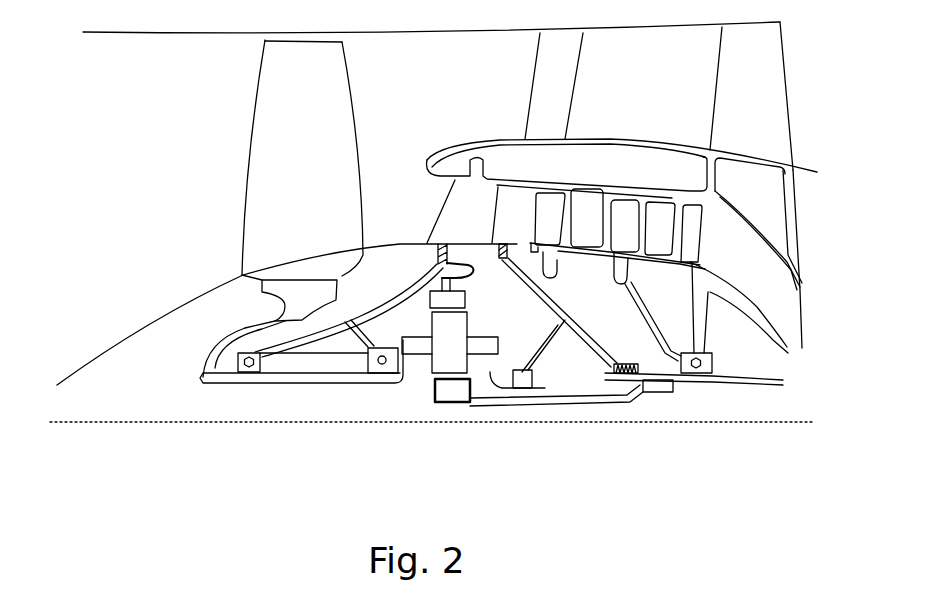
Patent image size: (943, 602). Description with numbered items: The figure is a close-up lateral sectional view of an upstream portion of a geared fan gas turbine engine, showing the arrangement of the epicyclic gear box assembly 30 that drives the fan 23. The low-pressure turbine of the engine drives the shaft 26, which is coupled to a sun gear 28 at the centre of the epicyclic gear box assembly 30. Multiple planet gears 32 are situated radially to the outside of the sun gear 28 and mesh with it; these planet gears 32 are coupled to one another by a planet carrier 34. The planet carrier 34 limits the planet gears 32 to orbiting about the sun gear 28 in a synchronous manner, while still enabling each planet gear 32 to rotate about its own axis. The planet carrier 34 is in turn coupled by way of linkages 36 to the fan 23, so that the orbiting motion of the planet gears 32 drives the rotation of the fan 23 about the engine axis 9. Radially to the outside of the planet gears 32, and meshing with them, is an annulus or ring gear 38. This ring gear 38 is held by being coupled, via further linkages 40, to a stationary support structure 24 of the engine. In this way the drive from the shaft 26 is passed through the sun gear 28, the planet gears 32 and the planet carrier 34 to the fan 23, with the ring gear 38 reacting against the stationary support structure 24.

The engine axis 9 is at (233, 423).
The fan 23 is at (268, 160).
The stationary support structure 24 is at (443, 208).
The shaft 26 is at (588, 410).
The sun gear 28 is at (452, 392).
The epicyclic gear box assembly 30 is at (393, 402).
The planet gears 32 is at (437, 367).
The planet carrier 34 is at (488, 390).
The linkages 36 is at (402, 382).
The ring gear 38 is at (430, 302).
The linkages 40 is at (458, 280).